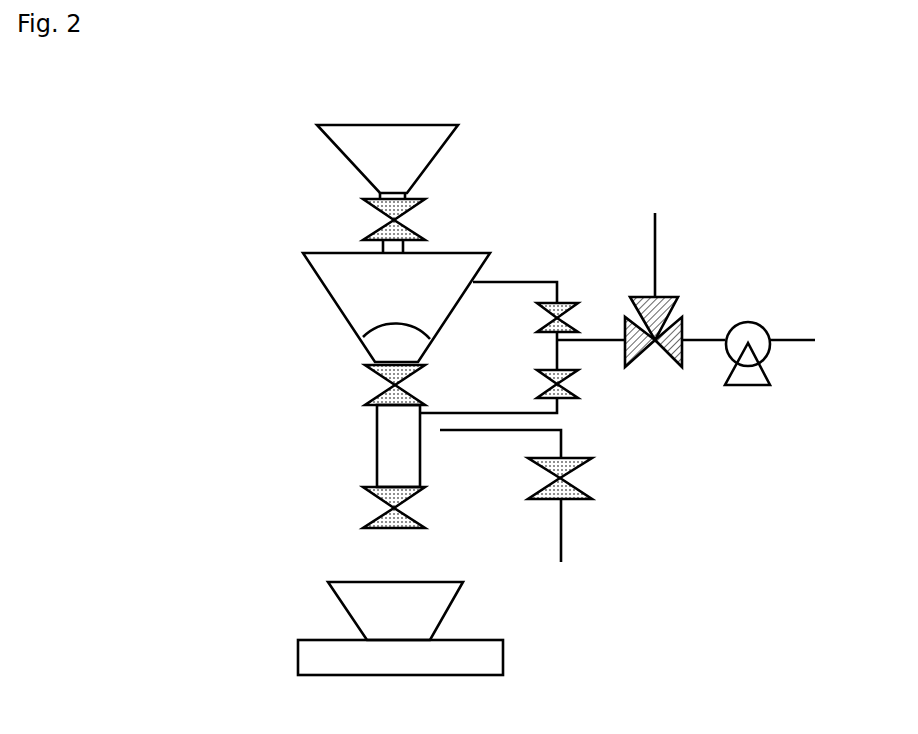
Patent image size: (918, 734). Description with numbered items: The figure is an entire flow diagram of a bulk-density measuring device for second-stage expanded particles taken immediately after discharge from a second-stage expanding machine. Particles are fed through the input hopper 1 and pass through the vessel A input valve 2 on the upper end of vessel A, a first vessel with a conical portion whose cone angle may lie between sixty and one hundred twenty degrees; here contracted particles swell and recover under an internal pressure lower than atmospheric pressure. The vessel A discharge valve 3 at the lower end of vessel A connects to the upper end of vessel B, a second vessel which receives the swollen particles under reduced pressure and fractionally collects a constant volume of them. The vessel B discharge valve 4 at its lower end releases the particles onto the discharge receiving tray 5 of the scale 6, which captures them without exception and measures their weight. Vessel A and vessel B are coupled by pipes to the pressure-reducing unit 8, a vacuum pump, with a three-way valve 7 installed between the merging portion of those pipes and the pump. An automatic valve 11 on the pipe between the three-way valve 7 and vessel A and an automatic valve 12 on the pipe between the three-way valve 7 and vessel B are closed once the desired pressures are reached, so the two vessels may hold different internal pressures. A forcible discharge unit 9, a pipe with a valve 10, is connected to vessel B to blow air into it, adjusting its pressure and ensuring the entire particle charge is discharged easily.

The input hopper 1 is at (322, 121).
The vessel A input valve 2 is at (370, 214).
The vessel A is at (306, 272).
The vessel A discharge valve 3 is at (370, 385).
The vessel B is at (375, 445).
The vessel B discharge valve 4 is at (362, 512).
The discharge receiving tray 5 is at (340, 588).
The scale 6 is at (297, 643).
The three-way valve 7 is at (660, 362).
The pressure-reducing unit 8 is at (752, 394).
The forcible discharge unit 9 is at (443, 438).
The valve provided in forcible discharge unit 10 is at (573, 513).
The valve provided on pipe between three-way valve and vessel A 11 is at (571, 296).
The valve provided on pipe between three-way valve and vessel B 12 is at (586, 406).